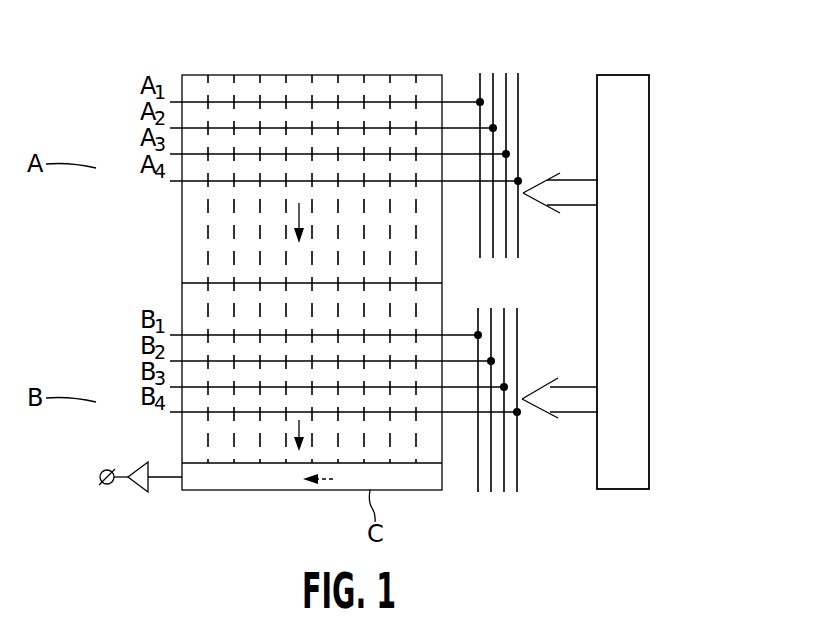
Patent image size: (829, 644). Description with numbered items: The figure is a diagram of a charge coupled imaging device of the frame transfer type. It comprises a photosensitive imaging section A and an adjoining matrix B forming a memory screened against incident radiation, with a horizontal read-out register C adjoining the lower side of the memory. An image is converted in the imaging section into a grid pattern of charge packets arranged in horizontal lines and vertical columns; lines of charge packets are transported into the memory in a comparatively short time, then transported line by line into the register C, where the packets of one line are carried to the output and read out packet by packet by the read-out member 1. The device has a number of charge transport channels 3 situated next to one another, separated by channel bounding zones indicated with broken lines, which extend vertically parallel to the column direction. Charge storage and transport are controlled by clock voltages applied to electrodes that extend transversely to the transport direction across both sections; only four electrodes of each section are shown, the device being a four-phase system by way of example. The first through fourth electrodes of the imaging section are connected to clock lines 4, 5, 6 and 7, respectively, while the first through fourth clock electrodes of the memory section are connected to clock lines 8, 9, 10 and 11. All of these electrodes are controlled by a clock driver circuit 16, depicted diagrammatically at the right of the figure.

The read-out member 1 is at (140, 488).
The charge transport channels 3 is at (193, 83).
The clock line 4 is at (480, 73).
The clock line 5 is at (493, 73).
The clock line 6 is at (506, 73).
The clock line 7 is at (518, 73).
The clock line 8 is at (478, 492).
The clock line 9 is at (491, 492).
The clock line 10 is at (504, 492).
The clock line 11 is at (517, 492).
The clock driver circuit 16 is at (640, 268).